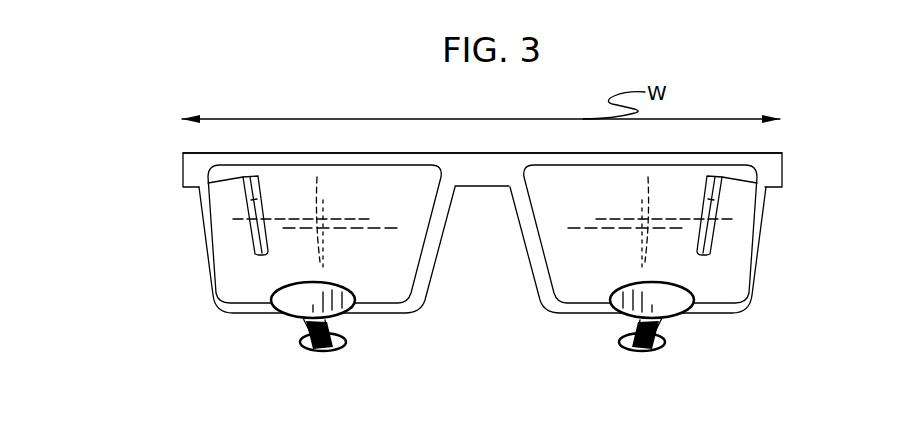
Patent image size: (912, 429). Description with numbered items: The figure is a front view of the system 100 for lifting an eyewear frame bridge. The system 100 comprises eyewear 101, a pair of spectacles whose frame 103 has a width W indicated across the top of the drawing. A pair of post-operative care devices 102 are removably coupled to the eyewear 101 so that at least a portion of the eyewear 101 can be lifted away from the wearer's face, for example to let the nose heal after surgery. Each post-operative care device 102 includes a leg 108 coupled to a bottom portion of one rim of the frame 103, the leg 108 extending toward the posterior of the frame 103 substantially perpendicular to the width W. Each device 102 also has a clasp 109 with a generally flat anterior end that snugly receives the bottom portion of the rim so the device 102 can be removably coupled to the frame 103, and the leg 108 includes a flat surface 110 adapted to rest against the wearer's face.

The system for lifting an eyewear frame bridge 100 is at (493, 241).
The eyewear 101 is at (178, 146).
The post-operative care device 102 is at (262, 322).
The frame 103 is at (380, 152).
The leg 108 is at (531, 344).
The clasp 109 is at (303, 295).
The flat surface 110 is at (322, 352).